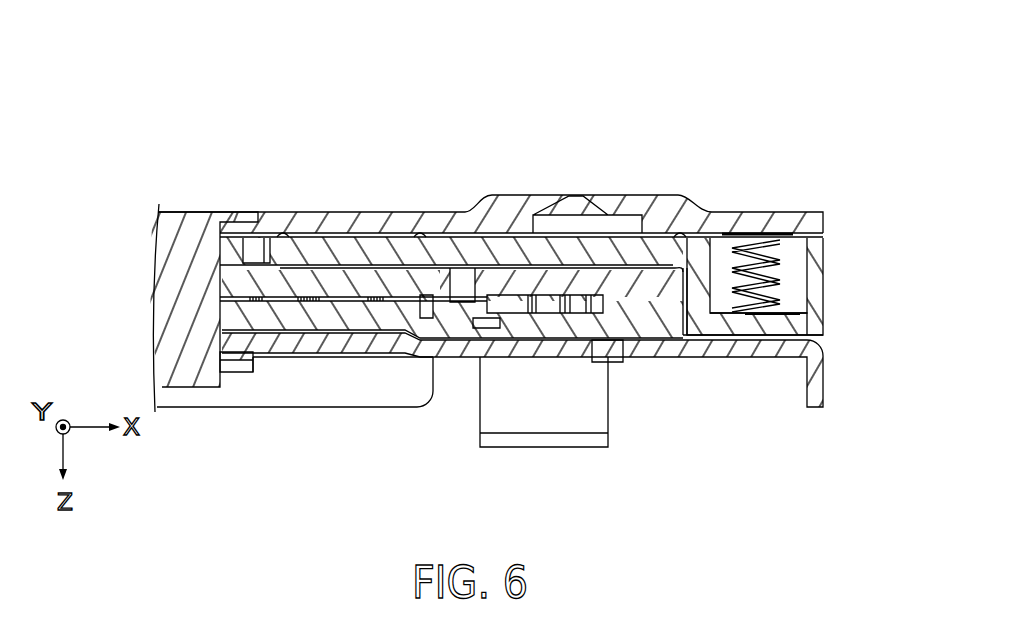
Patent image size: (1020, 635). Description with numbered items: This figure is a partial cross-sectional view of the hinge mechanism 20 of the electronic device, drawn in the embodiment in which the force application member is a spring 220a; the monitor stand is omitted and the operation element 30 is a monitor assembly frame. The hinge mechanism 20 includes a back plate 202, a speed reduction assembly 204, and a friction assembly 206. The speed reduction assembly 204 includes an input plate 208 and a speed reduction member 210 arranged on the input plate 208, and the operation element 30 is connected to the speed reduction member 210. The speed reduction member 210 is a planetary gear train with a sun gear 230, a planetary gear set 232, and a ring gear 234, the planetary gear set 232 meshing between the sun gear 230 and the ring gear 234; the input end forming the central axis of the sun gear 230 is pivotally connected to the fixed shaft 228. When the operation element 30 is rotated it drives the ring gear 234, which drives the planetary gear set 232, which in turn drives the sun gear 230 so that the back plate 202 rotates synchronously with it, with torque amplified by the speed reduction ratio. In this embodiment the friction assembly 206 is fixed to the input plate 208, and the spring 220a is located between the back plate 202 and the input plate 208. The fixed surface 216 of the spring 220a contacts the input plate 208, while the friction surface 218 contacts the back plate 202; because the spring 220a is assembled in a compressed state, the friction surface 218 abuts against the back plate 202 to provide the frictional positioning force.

The hinge mechanism 20 is at (73, 79).
The fixed shaft 228 is at (193, 265).
The back plate 202 is at (420, 228).
The planetary gear set 232 is at (325, 268).
The ring gear 234 is at (637, 313).
The friction assembly 206 is at (733, 312).
The speed reduction assembly 204 is at (857, 42).
The input plate 208 is at (812, 297).
The speed reduction member 210 is at (809, 218).
The spring 220a is at (770, 279).
The friction surface 218 is at (760, 224).
The fixed surface 216 is at (772, 325).
The operation element 30 is at (820, 382).
The sun gear 230 is at (252, 278).